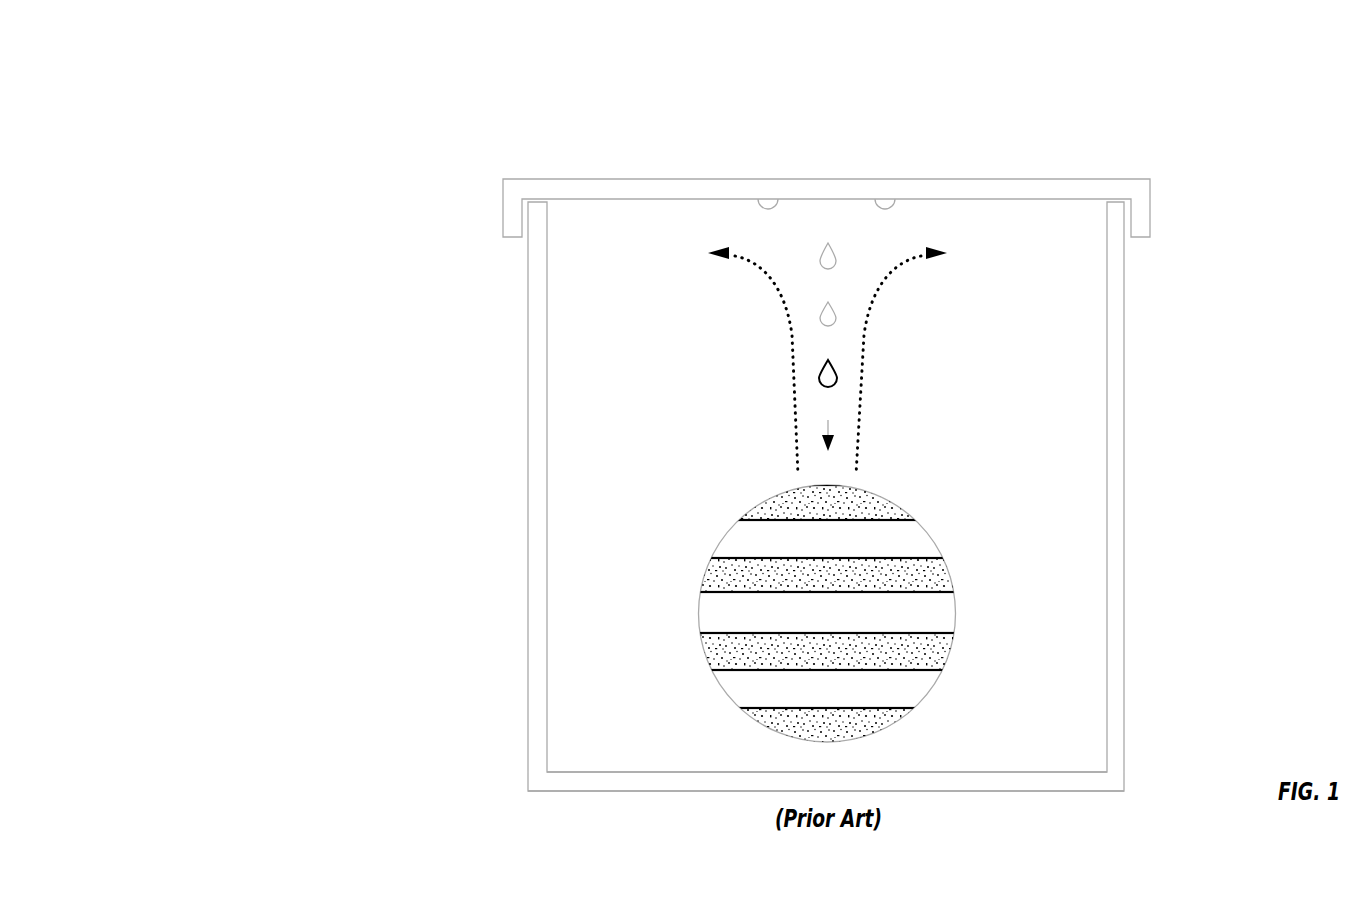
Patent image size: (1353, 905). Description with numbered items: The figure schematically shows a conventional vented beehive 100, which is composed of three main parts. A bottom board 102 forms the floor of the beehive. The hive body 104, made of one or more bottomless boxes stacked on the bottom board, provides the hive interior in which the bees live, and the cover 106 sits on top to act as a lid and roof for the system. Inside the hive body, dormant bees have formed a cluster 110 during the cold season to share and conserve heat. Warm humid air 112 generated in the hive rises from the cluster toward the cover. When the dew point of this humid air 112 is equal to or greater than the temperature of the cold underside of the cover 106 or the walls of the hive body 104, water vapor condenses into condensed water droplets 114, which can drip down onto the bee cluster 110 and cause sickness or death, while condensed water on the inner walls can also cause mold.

The beehive 100 is at (866, 52).
The bottom board 102 is at (508, 770).
The hive body 104 is at (512, 508).
The cover 106 is at (484, 203).
The bee cluster 110 is at (928, 623).
The warm humid air 112 is at (857, 361).
The condensed water droplets 114 is at (824, 333).